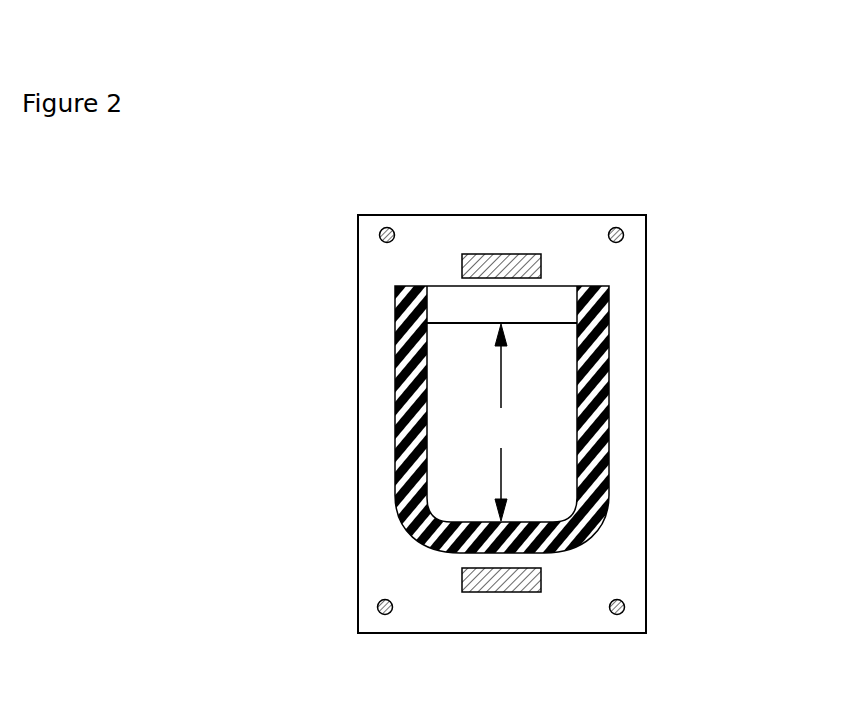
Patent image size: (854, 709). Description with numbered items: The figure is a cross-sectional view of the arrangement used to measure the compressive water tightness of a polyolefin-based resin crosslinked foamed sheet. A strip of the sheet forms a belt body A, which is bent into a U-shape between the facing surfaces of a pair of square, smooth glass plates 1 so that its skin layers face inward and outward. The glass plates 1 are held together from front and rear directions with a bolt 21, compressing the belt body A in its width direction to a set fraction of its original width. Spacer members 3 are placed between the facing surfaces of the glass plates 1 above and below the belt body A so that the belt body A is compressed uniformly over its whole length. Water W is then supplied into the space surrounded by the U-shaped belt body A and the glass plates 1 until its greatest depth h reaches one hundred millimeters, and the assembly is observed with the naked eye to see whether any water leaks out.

The glass plate 1 is at (358, 442).
The bolt 21 is at (381, 230).
The spacer member 3 is at (500, 260).
The belt body A is at (607, 402).
The water W is at (435, 348).
The greatest depth h is at (501, 422).